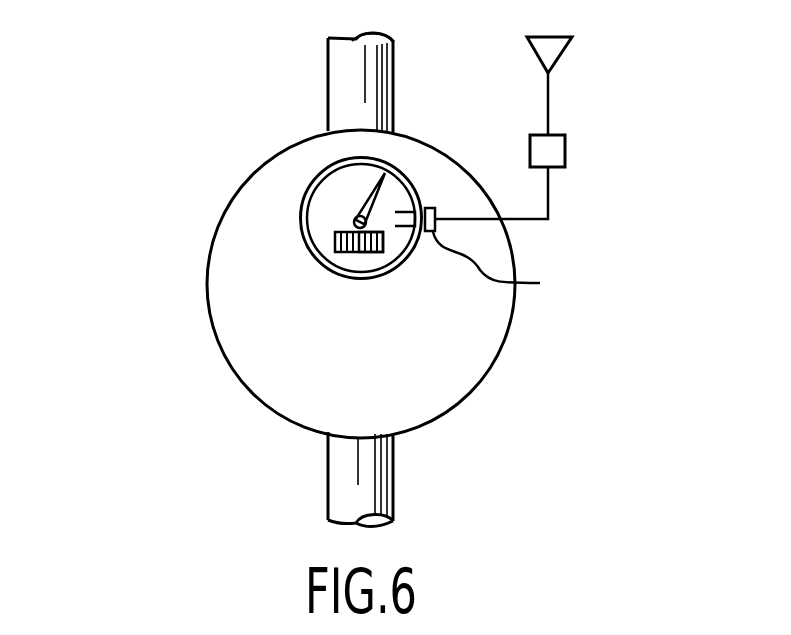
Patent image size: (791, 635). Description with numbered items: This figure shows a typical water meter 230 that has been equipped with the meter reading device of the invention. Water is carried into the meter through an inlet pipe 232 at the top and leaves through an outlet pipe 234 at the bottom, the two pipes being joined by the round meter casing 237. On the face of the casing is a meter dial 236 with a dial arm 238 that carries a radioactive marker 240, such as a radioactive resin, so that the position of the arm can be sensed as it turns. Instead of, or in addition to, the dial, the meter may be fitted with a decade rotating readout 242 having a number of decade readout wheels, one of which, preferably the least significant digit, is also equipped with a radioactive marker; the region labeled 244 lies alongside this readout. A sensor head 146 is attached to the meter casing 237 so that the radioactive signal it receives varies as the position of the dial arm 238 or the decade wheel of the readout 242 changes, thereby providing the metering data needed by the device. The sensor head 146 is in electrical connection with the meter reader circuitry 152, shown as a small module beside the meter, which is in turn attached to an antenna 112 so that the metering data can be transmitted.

The water meter 230 is at (178, 367).
The inlet pipe 232 is at (327, 61).
The outlet pipe 234 is at (395, 479).
The meter dial 236 is at (305, 213).
The meter casing 237 is at (416, 190).
The dial arm 238 is at (385, 172).
The radioactive marker 240 is at (347, 182).
The decade rotating readout 242 is at (338, 252).
The counter register wheel 244 is at (381, 252).
The sensor head 146 is at (507, 233).
The meter reader circuitry 152 is at (565, 150).
The antenna 112 is at (562, 56).